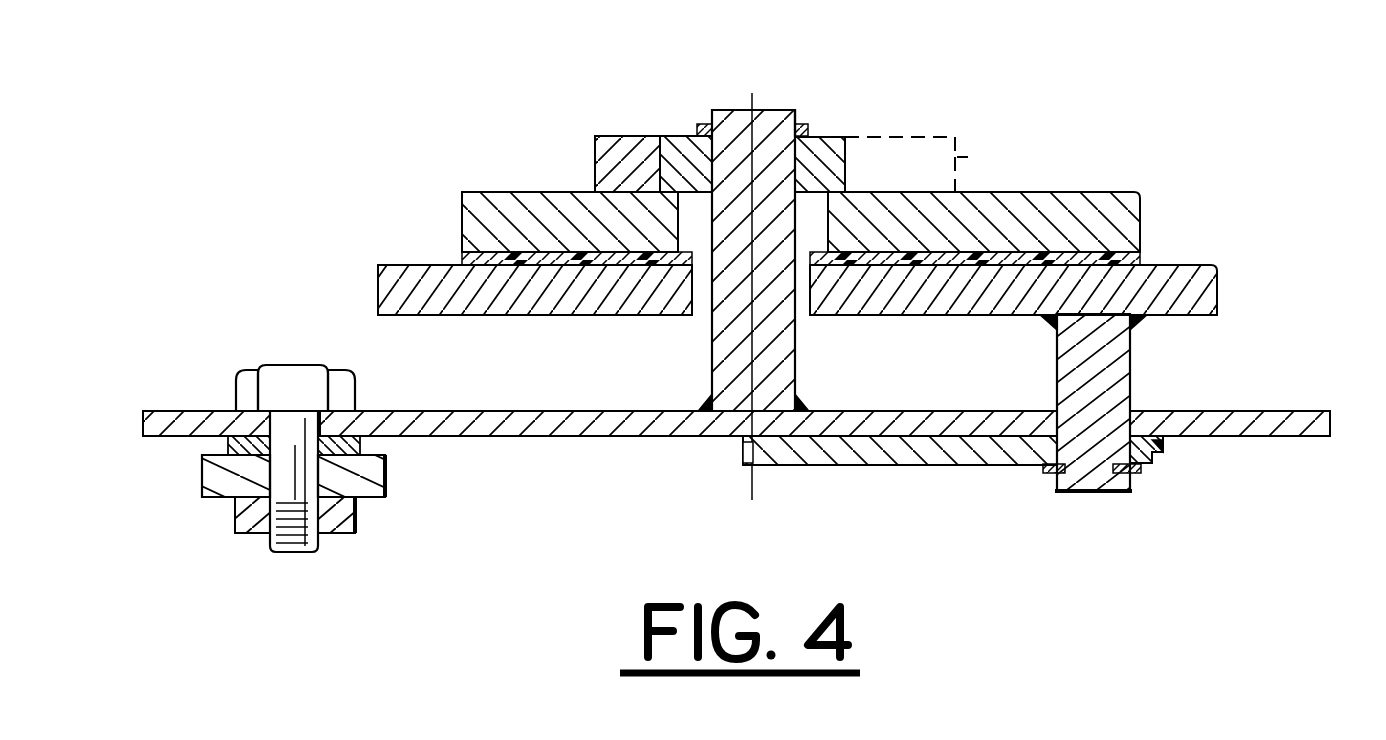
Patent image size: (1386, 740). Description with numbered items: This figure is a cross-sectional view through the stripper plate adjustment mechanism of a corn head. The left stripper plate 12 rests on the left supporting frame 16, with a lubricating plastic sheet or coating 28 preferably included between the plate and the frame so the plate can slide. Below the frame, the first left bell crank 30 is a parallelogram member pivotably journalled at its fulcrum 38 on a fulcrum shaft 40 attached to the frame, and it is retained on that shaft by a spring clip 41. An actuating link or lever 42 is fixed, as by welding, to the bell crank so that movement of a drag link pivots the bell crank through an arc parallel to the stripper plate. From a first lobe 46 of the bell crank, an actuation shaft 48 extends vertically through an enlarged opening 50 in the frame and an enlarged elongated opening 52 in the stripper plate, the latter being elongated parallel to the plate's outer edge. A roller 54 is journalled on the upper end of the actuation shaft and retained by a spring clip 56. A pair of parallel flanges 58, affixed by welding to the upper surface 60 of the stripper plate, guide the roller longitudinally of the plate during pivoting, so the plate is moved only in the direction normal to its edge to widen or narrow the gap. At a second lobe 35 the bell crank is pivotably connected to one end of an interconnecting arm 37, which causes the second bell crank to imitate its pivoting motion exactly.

The left stripper plate 12 is at (1142, 215).
The left supporting frame 16 is at (1218, 300).
The lubricating plastic sheet or coating 28 is at (1143, 258).
The first left bell crank 30 is at (1282, 410).
The second lobe 35 is at (202, 436).
The interconnecting arm 37 is at (388, 468).
The fulcrum 38 is at (1093, 492).
The fulcrum shaft 40 is at (1132, 365).
The spring clip 41 is at (1138, 470).
The actuating link or lever 42 is at (962, 466).
The first lobe 46 is at (768, 427).
The actuation shaft 48 is at (797, 365).
The enlarged opening 50 is at (700, 300).
The enlarged elongated opening 52 is at (830, 175).
The roller 54 is at (840, 135).
The spring clip 56 is at (812, 128).
The parallel flanges 58 is at (622, 137).
The upper surface 60 is at (478, 192).